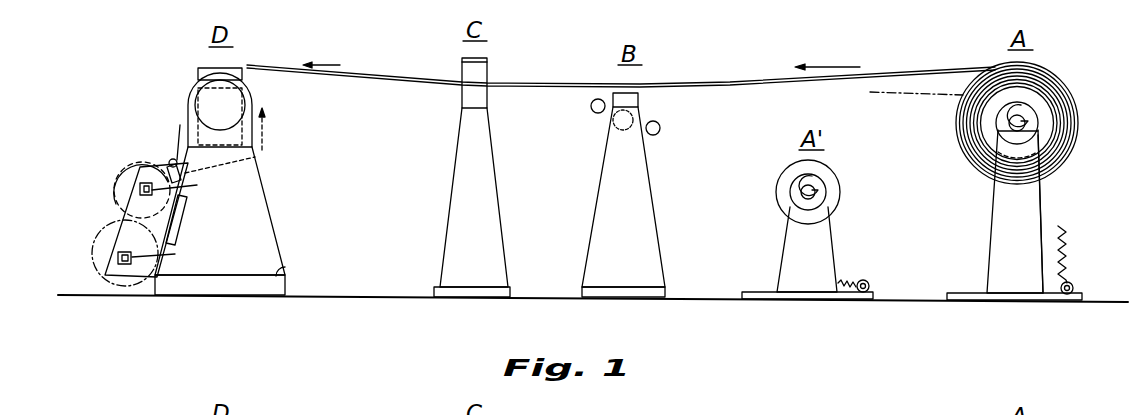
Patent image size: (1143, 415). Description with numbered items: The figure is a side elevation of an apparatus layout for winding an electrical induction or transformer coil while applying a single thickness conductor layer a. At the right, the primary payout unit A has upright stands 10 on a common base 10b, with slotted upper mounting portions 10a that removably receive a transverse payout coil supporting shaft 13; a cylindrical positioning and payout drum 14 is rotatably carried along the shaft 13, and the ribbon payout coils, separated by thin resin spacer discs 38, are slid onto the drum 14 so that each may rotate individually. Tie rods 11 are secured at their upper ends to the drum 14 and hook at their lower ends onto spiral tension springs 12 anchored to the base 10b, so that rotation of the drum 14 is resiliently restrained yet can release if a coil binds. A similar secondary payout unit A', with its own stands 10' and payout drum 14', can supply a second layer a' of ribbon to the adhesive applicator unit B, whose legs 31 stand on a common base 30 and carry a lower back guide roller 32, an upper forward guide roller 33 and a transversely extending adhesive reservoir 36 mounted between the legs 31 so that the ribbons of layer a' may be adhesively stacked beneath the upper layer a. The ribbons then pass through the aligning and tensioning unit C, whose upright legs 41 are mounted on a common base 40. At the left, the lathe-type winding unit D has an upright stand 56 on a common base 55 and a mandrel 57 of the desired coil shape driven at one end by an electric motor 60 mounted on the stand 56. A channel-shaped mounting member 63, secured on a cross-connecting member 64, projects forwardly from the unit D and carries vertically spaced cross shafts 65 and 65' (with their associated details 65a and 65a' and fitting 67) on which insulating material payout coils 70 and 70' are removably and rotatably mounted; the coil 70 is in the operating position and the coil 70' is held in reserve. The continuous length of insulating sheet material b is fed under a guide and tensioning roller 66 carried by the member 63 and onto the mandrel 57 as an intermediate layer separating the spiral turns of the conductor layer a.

The conductor layer a is at (621, 78).
The second layer a' is at (916, 109).
The sheet insulating material b is at (268, 136).
The upright stands 10 is at (1049, 211).
The upright stands 10' is at (811, 253).
The slotted upper mounting portions 10a is at (1000, 124).
The common base 10b is at (1082, 302).
The tie rods 11 is at (1058, 185).
The spiral tension or expansion spring 12 is at (1068, 254).
The payout coil supporting shaft 13 is at (1026, 116).
The positioning and payout drum 14 is at (1062, 123).
The positioning and payout drum 14' is at (832, 192).
The common base 30 is at (598, 287).
The stands or legs 31 is at (650, 191).
The guide roller 32 is at (660, 134).
The guide roller 33 is at (591, 109).
The reservoir 36 is at (640, 97).
The spacer discs 38 is at (1044, 72).
The common base 40 is at (448, 287).
The upright stands or legs 41 is at (503, 191).
The common base 55 is at (286, 270).
The upright stand 56 is at (265, 233).
The mandrel 57 is at (196, 76).
The electric motor 60 is at (234, 100).
The channel-shaped mounting member 63 is at (122, 224).
The cross-connecting member 64 is at (184, 216).
The cross shaft 65 is at (110, 183).
The cross shaft 65' is at (88, 267).
The fastener detail 65a is at (196, 183).
The fastener detail 65a' is at (179, 254).
The guide and tensioning roller 66 is at (171, 158).
The pin 67 is at (165, 130).
The insulating material payout coil 70 is at (121, 180).
The insulating material payout coil 70' is at (104, 253).